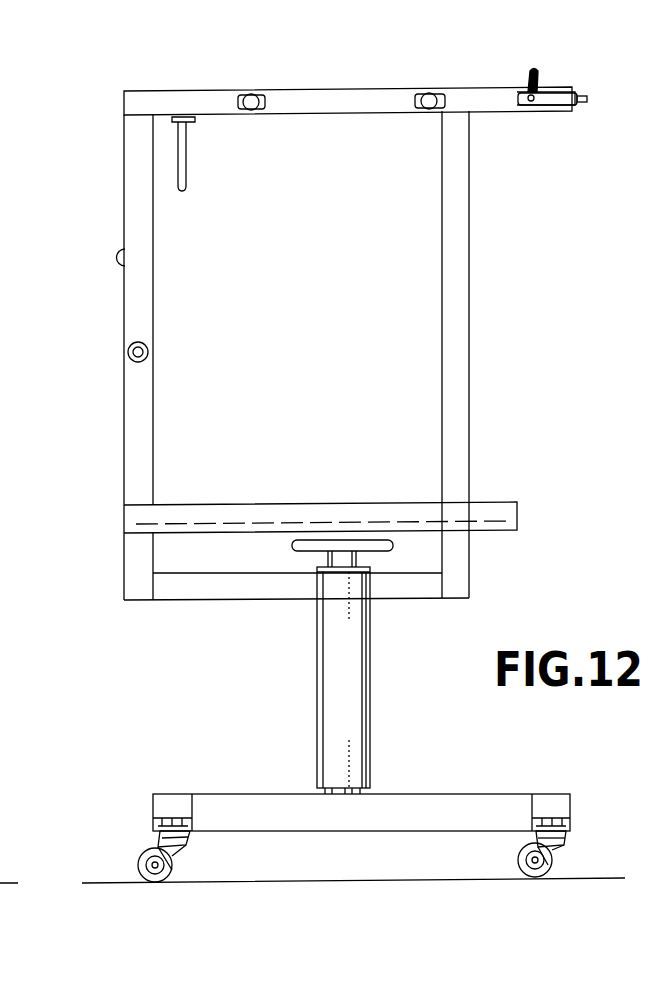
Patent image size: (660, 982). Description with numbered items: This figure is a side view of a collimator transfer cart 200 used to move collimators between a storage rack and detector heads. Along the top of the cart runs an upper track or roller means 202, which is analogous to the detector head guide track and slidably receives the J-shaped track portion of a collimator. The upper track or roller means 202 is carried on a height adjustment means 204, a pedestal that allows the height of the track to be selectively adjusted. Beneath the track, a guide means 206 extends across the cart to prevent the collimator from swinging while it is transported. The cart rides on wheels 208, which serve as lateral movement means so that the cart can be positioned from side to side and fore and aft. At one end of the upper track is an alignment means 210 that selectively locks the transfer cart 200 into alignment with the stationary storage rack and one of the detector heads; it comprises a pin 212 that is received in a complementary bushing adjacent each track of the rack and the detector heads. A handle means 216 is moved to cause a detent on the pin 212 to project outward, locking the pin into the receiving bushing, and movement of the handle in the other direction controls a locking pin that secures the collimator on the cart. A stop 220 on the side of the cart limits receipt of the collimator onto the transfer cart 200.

The transfer cart 200 is at (122, 452).
The upper track or roller means 202 is at (252, 110).
The height adjustment means 204 is at (312, 711).
The guide means 206 is at (490, 523).
The wheels 208 is at (163, 866).
The alignment means 210 is at (565, 76).
The pin 212 is at (588, 99).
The handle means 216 is at (527, 73).
The stop 220 is at (128, 349).